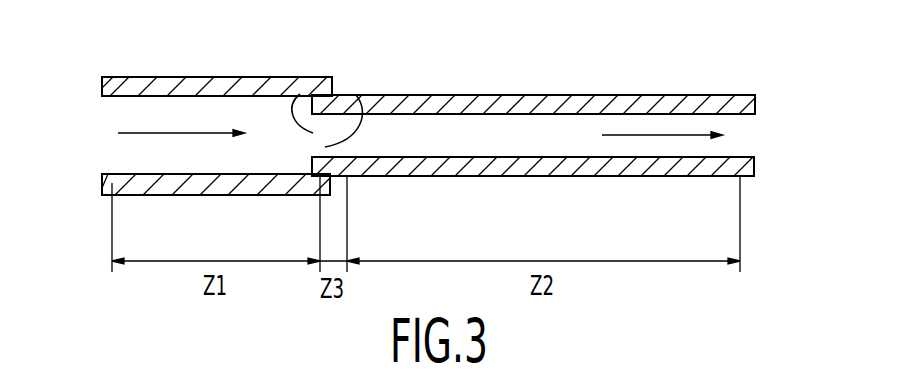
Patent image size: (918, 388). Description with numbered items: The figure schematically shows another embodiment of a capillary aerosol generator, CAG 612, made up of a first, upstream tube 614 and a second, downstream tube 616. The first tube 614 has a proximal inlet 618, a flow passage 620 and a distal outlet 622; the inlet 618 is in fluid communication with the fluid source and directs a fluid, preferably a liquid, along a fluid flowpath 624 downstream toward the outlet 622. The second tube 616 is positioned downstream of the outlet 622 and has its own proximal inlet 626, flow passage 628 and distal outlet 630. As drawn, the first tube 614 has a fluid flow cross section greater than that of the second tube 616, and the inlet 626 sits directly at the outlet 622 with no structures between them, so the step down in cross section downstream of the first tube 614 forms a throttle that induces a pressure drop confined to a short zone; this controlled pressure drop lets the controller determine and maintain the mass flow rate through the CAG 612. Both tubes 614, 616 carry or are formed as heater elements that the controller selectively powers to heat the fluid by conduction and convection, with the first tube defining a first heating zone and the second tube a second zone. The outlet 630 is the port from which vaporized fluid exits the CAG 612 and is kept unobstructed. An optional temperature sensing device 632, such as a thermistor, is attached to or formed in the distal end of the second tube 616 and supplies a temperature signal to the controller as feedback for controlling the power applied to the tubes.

The CAG 612 is at (131, 44).
The first tube 614 is at (242, 86).
The second tube 616 is at (517, 101).
The proximal inlet 618 is at (118, 155).
The flow passage 620 is at (203, 126).
The distal outlet 622 is at (308, 78).
The fluid flowpath 624 is at (134, 133).
The proximal inlet 626 is at (356, 93).
The flow passage 628 is at (483, 148).
The distal outlet 630 is at (747, 137).
The temperature sensing device 632 is at (756, 160).